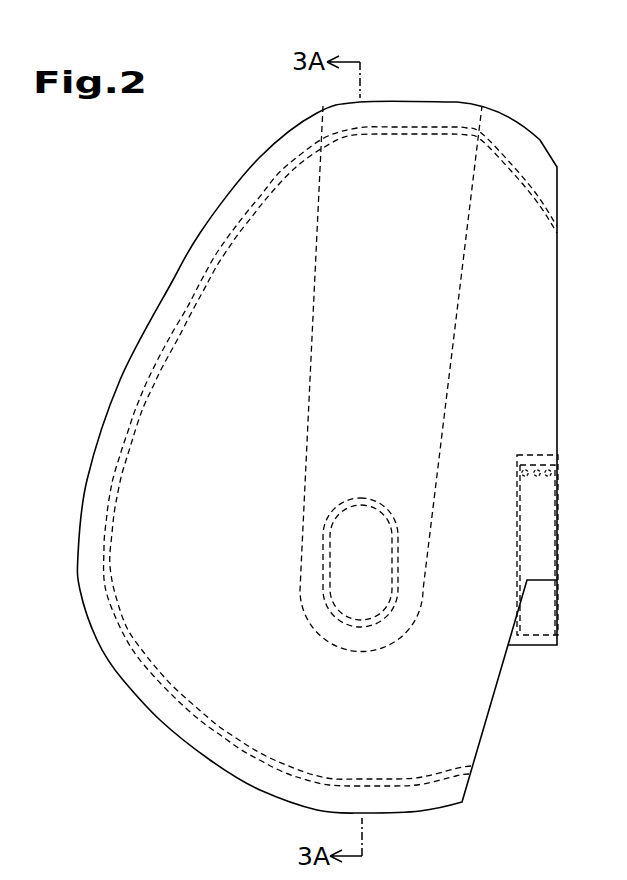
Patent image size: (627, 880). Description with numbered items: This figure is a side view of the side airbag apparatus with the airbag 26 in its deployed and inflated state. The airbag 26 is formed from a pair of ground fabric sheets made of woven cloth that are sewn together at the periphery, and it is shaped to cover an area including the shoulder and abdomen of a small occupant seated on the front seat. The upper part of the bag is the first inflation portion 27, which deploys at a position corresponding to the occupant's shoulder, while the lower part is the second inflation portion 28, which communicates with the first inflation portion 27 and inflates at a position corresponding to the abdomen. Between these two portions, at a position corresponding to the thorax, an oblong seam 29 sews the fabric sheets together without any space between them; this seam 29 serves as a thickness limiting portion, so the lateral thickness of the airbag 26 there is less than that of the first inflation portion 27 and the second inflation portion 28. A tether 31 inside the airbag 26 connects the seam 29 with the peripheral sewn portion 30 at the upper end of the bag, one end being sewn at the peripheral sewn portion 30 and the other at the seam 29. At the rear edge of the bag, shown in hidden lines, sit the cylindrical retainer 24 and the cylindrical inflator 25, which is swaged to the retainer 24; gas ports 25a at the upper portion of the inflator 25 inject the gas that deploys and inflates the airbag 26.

The retainer 24 is at (536, 454).
The inflator 25 is at (533, 533).
The gas ports 25a is at (522, 477).
The airbag 26 is at (268, 145).
The first inflation portion 27 is at (258, 283).
The second inflation portion 28 is at (242, 722).
The seam 29 is at (326, 537).
The peripheral sewn portion 30 is at (443, 127).
The tether 31 is at (305, 475).